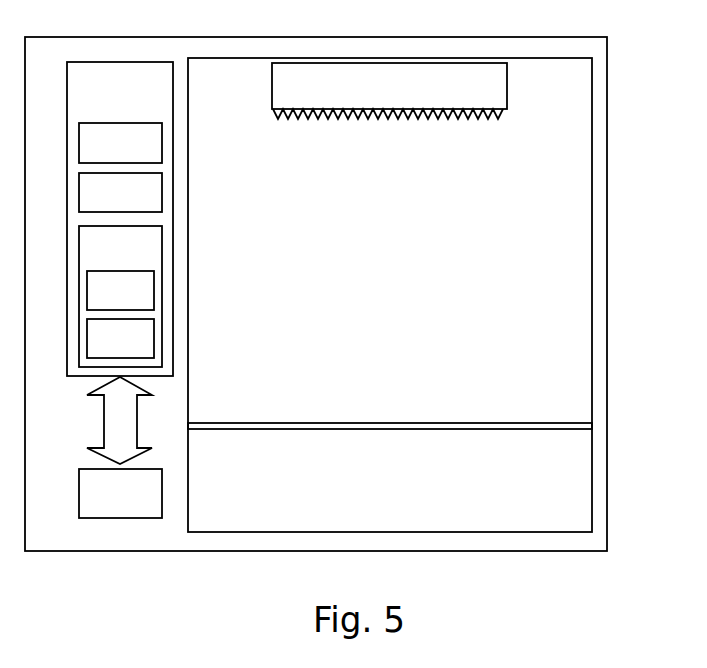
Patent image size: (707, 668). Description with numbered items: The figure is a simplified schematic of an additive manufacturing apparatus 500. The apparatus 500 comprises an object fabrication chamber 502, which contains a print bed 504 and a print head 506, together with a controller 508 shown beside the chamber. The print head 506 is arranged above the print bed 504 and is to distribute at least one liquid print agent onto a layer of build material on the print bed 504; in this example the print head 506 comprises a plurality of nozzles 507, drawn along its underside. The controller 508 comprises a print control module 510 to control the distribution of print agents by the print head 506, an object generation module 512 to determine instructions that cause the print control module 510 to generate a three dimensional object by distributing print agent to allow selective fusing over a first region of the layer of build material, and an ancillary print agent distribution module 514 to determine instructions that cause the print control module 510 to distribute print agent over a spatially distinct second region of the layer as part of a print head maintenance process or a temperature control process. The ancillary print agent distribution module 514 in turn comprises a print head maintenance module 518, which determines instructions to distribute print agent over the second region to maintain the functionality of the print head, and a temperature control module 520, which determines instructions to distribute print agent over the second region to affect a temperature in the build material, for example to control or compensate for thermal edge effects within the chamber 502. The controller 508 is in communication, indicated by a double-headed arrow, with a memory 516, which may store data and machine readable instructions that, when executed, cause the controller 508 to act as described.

The additive manufacturing apparatus 500 is at (607, 80).
The object fabrication chamber 502 is at (582, 519).
The print bed 504 is at (572, 421).
The print head 506 is at (410, 94).
The nozzles 507 is at (531, 109).
The controller 508 is at (139, 101).
The print control module 510 is at (139, 156).
The object generation module 512 is at (139, 207).
The ancillary print agent distribution module 514 is at (139, 261).
The memory 516 is at (139, 511).
The print head maintenance module 518 is at (139, 299).
The temperature control module 520 is at (139, 347).